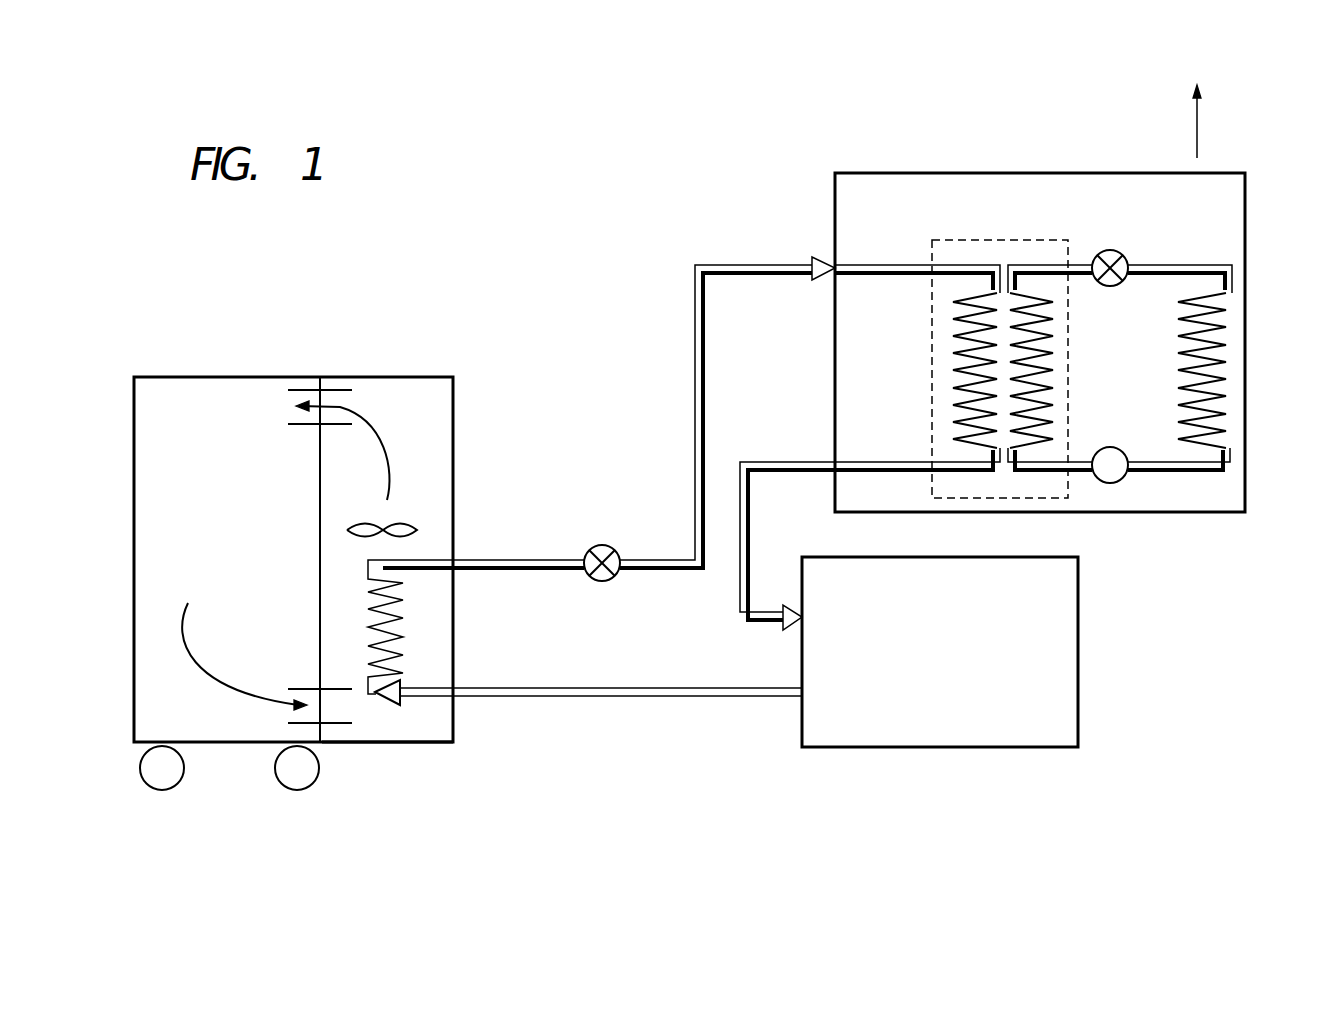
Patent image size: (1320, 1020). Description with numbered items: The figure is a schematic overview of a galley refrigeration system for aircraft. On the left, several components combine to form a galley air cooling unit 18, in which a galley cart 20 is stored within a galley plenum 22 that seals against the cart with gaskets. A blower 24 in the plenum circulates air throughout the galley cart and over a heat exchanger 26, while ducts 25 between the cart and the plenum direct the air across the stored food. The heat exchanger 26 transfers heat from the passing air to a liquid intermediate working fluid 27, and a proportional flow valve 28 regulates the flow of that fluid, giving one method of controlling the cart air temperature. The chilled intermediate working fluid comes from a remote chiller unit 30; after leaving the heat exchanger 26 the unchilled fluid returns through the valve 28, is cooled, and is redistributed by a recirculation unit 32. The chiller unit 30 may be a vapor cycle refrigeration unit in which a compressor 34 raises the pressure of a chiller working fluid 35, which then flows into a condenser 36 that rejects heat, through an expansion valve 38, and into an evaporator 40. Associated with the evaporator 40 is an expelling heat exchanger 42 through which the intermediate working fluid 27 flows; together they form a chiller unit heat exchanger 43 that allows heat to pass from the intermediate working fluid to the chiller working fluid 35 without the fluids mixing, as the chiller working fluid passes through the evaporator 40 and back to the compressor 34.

The galley air cooling unit 18 is at (272, 376).
The galley cart 20 is at (205, 745).
The galley plenum 22 is at (410, 745).
The blower 24 is at (405, 522).
The ducts 25 is at (343, 390).
The heat exchanger 26 is at (405, 622).
The intermediate working fluid 27 is at (755, 262).
The proportional flow valve 28 is at (600, 545).
The chiller unit 30 is at (968, 172).
The recirculation unit 32 is at (1085, 672).
The compressor 34 is at (1115, 483).
The chiller working fluid 35 is at (1207, 465).
The condenser 36 is at (1225, 360).
The expansion valve 38 is at (1128, 258).
The evaporator 40 is at (984, 391).
The expelling heat exchanger 42 is at (953, 355).
The chiller unit heat exchanger 43 is at (932, 425).